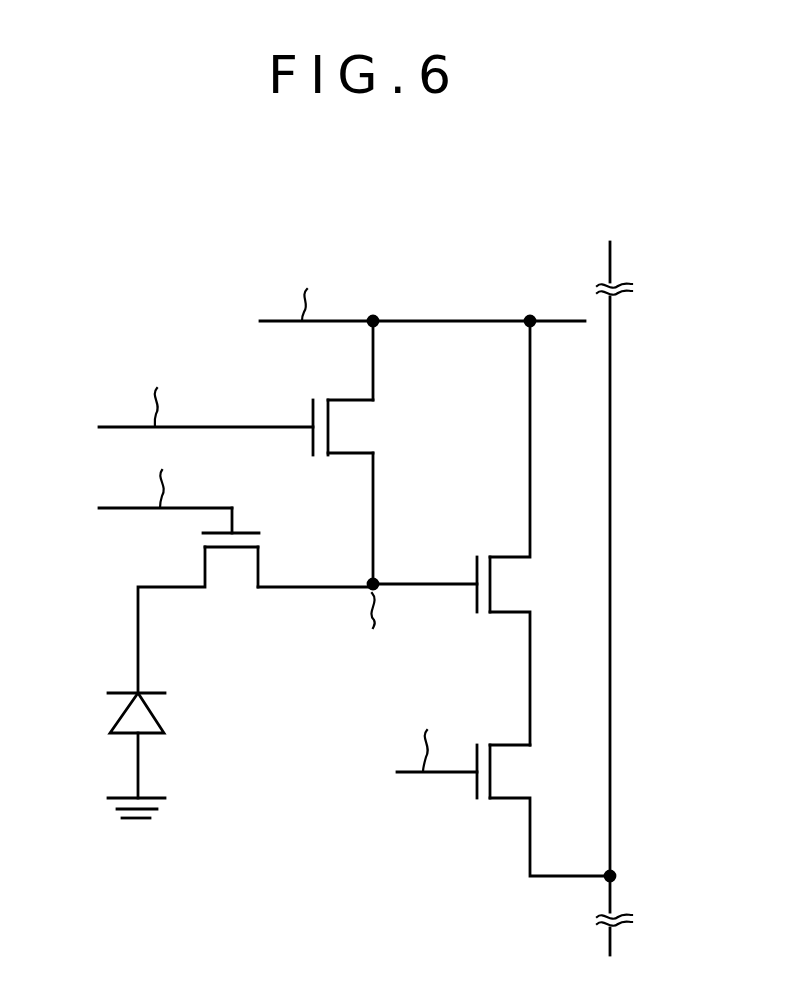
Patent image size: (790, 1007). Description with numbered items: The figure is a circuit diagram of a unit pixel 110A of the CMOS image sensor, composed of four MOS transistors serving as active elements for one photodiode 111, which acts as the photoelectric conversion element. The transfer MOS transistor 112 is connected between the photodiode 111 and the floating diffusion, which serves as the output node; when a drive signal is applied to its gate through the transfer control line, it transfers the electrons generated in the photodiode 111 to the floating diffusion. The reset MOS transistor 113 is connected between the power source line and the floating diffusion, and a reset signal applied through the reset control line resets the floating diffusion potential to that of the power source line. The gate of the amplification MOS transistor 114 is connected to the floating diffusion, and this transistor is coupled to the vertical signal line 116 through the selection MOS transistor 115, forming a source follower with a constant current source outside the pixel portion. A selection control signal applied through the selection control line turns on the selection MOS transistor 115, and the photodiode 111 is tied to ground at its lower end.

The unit pixel 110A is at (263, 229).
The photodiode 111 is at (120, 712).
The transfer MOS transistor 112 is at (237, 572).
The reset MOS transistor 113 is at (357, 427).
The amplification MOS transistor 114 is at (502, 590).
The selection MOS transistor 115 is at (502, 777).
The vertical signal line 116 is at (611, 683).